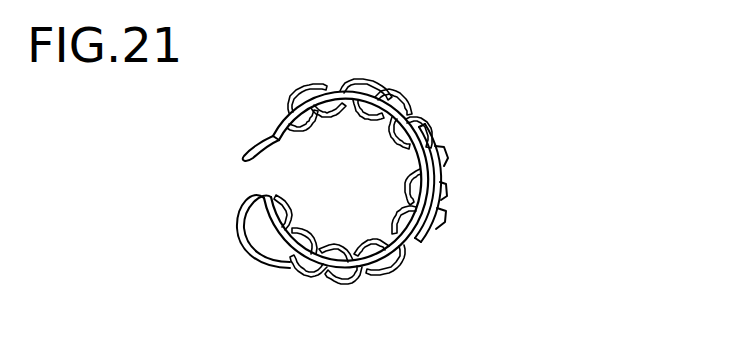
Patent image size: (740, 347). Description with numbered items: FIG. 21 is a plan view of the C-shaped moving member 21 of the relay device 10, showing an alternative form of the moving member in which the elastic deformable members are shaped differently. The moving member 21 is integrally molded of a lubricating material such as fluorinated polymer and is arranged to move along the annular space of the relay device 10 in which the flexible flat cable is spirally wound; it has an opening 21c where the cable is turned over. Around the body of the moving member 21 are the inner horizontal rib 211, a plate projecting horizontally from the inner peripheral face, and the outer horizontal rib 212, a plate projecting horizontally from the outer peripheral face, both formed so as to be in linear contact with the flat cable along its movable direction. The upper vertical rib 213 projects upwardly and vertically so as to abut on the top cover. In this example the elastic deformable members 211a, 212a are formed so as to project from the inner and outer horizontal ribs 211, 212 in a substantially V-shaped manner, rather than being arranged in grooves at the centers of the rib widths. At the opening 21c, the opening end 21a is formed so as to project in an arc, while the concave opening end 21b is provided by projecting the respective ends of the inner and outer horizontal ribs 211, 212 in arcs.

The relay device 10 is at (472, 73).
The moving member 21 is at (412, 102).
The opening end 21a is at (242, 196).
The concave opening end 21b is at (243, 157).
The opening 21c is at (257, 171).
The inner horizontal rib 211 is at (398, 172).
The elastic deformable member 211a is at (388, 148).
The outer horizontal rib 212 is at (436, 181).
The elastic deformable member 212a is at (442, 152).
The upper vertical rib 213 is at (440, 204).